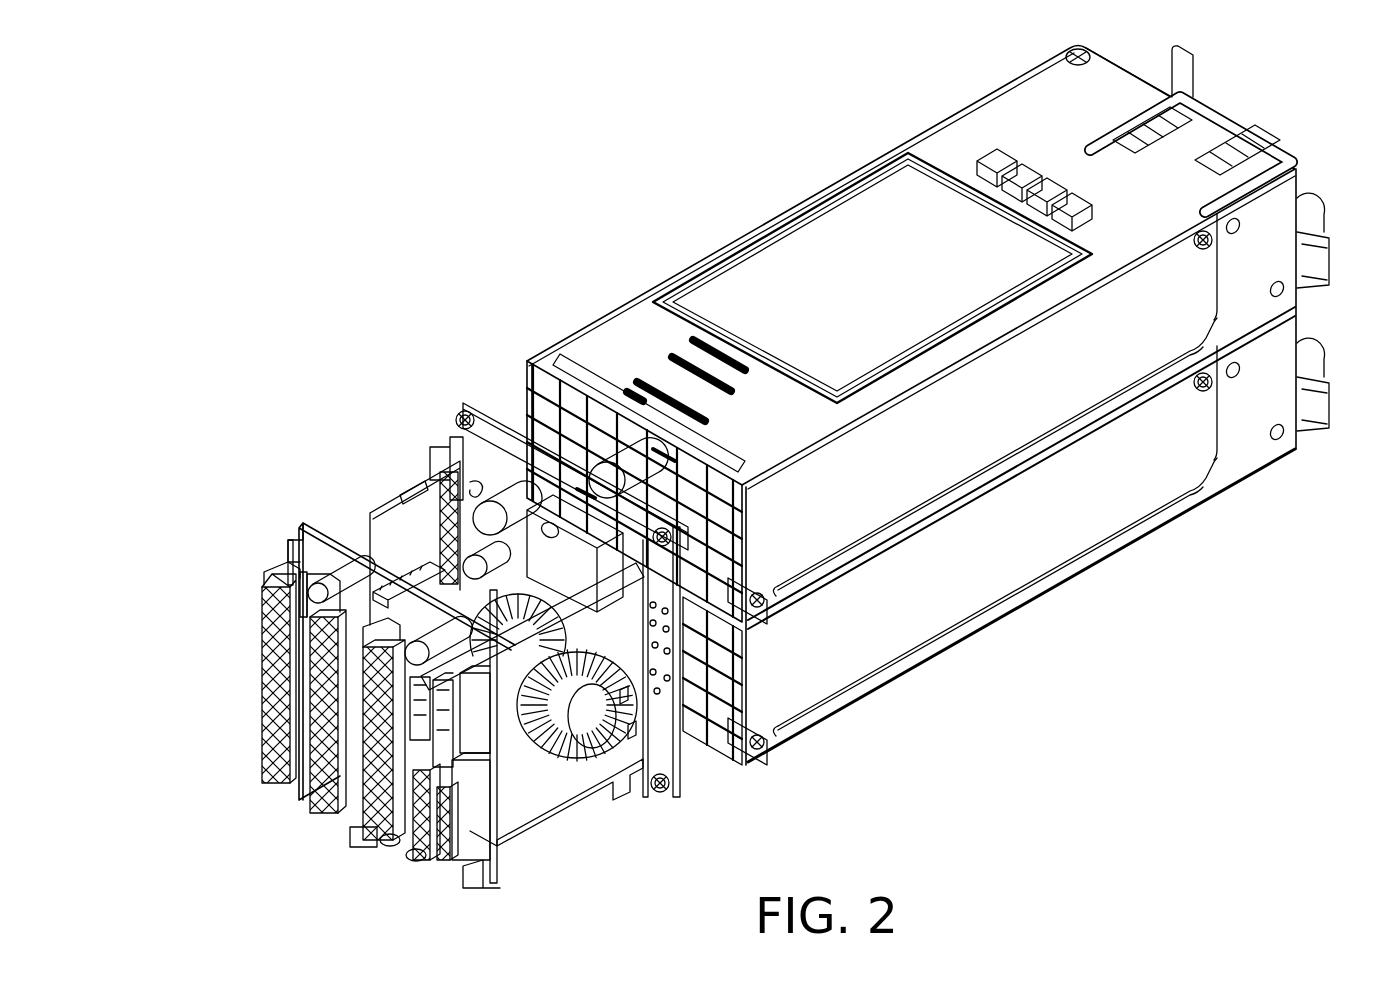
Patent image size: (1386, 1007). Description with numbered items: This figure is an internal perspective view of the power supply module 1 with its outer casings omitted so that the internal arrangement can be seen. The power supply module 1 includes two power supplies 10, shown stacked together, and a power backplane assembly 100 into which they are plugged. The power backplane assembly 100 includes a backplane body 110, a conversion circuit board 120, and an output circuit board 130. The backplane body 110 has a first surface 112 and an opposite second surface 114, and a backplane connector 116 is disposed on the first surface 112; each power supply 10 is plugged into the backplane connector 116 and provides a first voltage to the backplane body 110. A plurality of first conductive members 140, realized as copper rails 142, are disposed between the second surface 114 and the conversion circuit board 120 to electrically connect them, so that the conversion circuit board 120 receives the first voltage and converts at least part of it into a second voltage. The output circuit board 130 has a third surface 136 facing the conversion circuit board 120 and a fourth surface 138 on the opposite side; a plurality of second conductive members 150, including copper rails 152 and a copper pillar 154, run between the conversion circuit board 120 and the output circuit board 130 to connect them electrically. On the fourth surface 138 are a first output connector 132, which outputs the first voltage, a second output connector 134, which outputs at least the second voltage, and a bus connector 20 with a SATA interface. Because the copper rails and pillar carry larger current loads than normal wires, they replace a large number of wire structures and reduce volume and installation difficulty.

The power supply module 1 is at (737, 100).
The power supply 10 is at (987, 113).
The bus connector 20 is at (305, 652).
The power backplane assembly 100 is at (278, 450).
The backplane body 110 is at (490, 408).
The first surface 112 is at (692, 787).
The second surface 114 is at (457, 415).
The backplane connector 116 is at (718, 612).
The conversion circuit board 120 is at (633, 781).
The output circuit board 130 is at (313, 543).
The first output connector 132 is at (277, 580).
The second output connector 134 is at (367, 833).
The third surface 136 is at (505, 859).
The fourth surface 138 is at (477, 870).
The first conductive members 140 is at (704, 817).
The copper rails 142 is at (670, 775).
The second conductive members 150 is at (497, 663).
The copper rails 152 is at (382, 545).
The copper pillar 154 is at (437, 506).